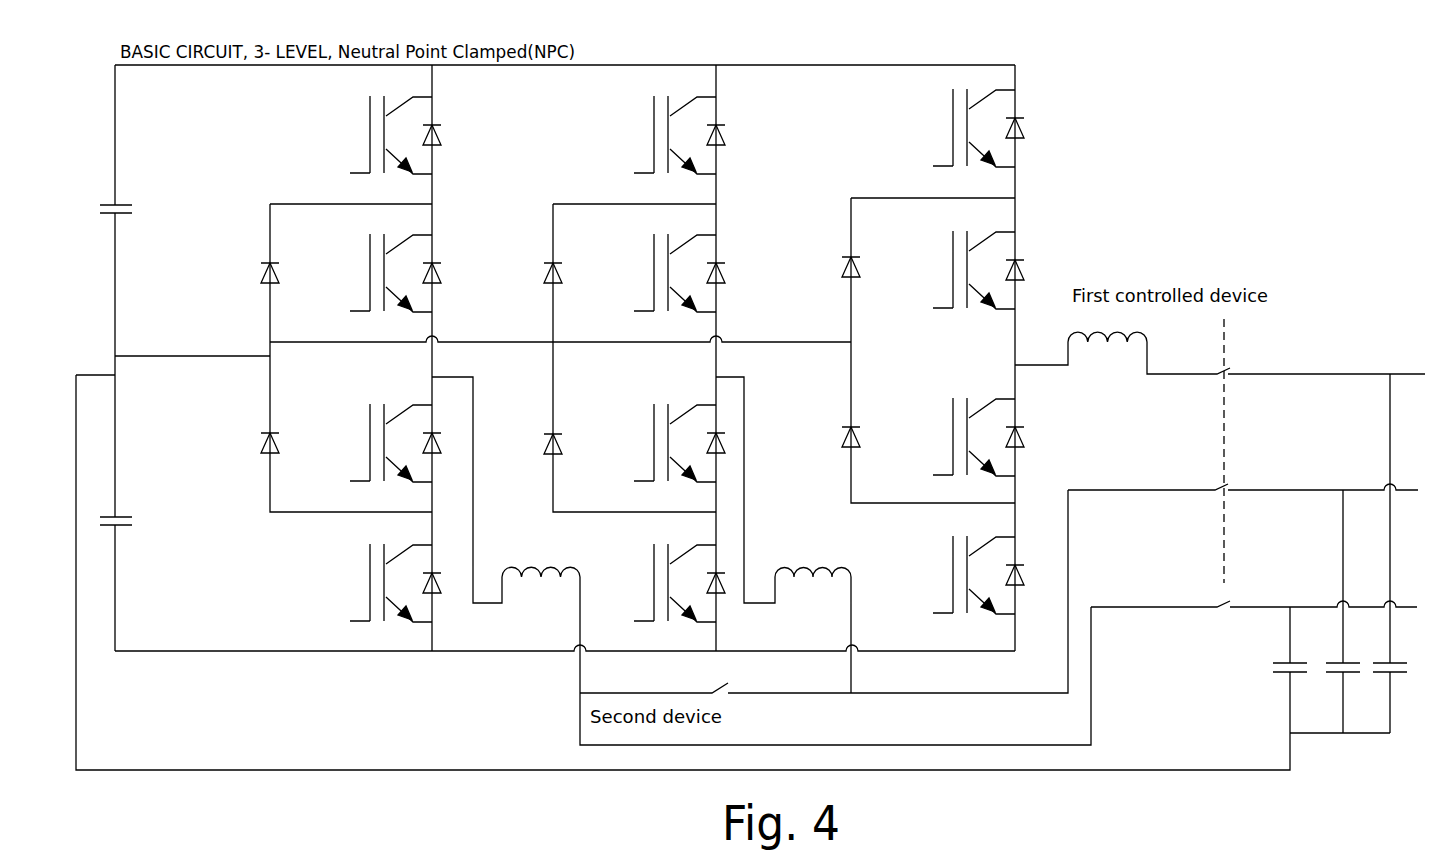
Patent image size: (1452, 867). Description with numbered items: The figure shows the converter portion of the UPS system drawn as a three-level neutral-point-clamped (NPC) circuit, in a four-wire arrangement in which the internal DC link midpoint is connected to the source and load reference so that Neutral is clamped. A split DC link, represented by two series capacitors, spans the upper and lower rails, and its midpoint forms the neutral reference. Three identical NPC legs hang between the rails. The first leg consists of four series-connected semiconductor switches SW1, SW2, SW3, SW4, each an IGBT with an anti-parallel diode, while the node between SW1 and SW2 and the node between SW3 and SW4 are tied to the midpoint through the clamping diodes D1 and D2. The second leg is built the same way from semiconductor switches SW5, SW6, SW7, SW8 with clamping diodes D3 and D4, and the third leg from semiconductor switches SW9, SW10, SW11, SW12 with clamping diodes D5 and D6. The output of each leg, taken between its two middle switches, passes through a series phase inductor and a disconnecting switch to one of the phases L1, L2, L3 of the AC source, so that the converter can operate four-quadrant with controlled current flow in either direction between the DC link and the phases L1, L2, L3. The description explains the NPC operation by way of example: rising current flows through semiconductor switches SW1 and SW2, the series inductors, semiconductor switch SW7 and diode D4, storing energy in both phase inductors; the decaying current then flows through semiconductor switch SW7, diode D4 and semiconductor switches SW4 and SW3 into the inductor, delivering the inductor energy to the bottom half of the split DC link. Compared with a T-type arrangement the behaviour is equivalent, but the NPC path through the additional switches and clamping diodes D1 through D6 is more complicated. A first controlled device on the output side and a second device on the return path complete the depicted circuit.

The semiconductor switch SW1 is at (376, 135).
The semiconductor switch SW2 is at (376, 273).
The semiconductor switch SW3 is at (376, 443).
The semiconductor switch SW4 is at (376, 583).
The semiconductor switch SW5 is at (660, 135).
The semiconductor switch SW6 is at (660, 273).
The semiconductor switch SW7 is at (660, 443).
The semiconductor switch SW8 is at (660, 583).
The semiconductor switch SW9 is at (959, 128).
The semiconductor switch SW10 is at (958, 270).
The semiconductor switch SW11 is at (958, 437).
The semiconductor switch SW12 is at (958, 575).
The diode D1 is at (244, 297).
The diode D2 is at (244, 420).
The diode D3 is at (527, 297).
The diode D4 is at (527, 420).
The diode D5 is at (826, 290).
The diode D6 is at (826, 413).
The phase of the AC source L1 is at (1329, 358).
The phase of the AC source L2 is at (1249, 474).
The phase of the AC source L3 is at (1258, 591).